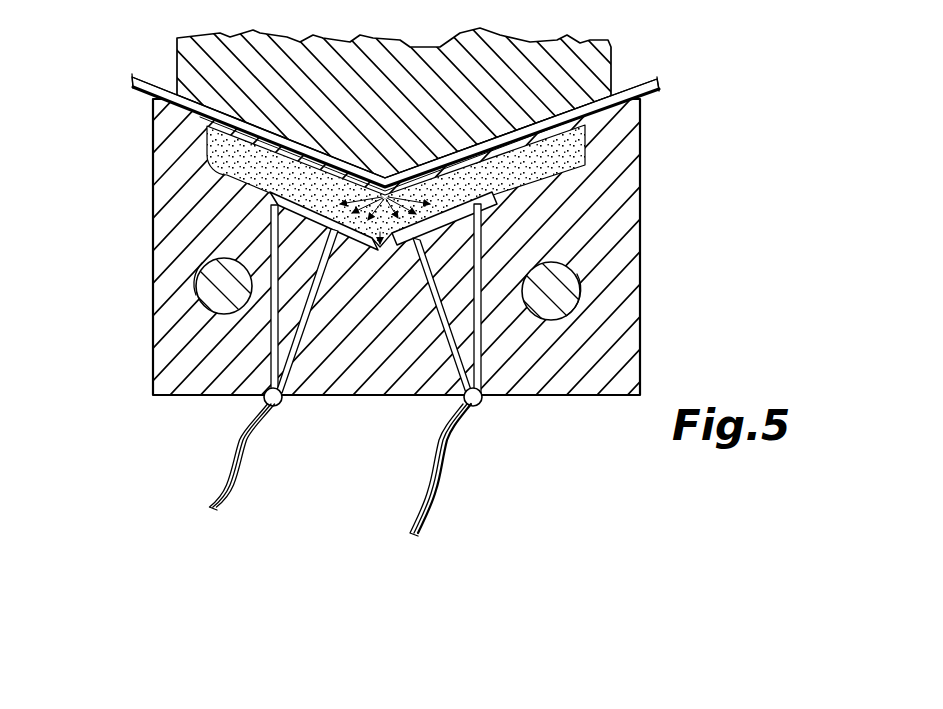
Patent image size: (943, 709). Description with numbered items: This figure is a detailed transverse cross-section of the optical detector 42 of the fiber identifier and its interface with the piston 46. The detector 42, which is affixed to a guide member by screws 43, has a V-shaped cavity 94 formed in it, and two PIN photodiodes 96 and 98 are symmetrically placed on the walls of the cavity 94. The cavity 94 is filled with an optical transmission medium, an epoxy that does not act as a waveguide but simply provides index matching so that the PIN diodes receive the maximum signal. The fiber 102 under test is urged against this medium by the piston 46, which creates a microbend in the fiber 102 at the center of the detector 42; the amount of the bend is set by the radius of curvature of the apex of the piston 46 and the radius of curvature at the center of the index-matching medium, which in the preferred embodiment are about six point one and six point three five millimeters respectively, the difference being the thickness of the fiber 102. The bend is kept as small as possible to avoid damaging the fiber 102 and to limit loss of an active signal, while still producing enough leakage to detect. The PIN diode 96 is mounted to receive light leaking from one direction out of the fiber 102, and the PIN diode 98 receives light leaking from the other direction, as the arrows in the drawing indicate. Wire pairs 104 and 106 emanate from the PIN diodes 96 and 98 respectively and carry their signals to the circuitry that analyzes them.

The optical detector 42 is at (514, 404).
The screws 43 is at (193, 288).
The piston 46 is at (613, 50).
The V-shaped cavity 94 is at (207, 140).
The PIN photodiode 96 is at (262, 201).
The PIN photodiode 98 is at (494, 198).
The fiber under test 102 is at (662, 87).
The wire pair 104 is at (246, 472).
The wire pair 106 is at (441, 438).